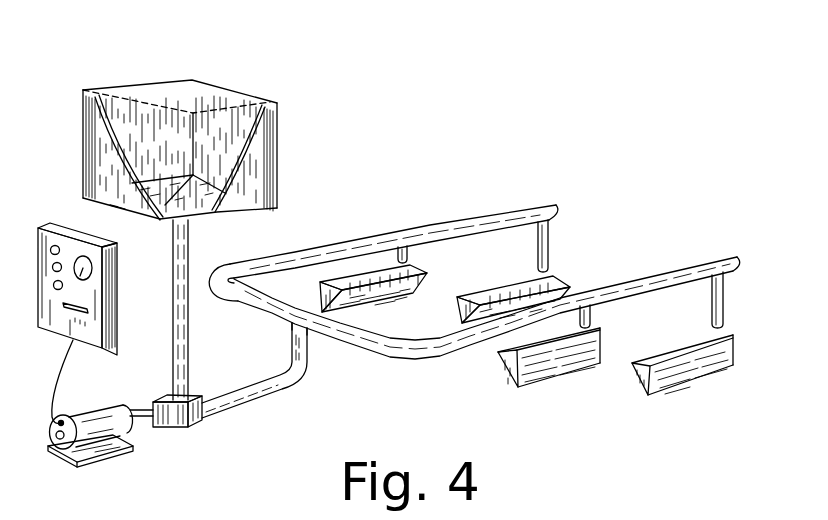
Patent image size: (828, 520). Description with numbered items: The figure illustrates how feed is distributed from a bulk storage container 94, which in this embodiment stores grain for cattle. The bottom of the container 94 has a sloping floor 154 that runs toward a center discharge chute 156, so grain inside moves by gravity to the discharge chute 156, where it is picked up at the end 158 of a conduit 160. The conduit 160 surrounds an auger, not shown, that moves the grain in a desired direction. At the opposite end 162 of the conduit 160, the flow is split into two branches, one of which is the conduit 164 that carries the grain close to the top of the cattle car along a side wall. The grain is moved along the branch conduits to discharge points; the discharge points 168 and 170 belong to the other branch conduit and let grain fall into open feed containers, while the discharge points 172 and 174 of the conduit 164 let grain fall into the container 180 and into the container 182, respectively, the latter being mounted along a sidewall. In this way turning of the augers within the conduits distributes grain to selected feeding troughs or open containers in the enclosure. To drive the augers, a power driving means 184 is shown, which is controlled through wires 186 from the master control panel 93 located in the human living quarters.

The bulk storage container 94 is at (214, 99).
The master control panel 93 is at (55, 222).
The sloping floor 154 is at (116, 205).
The discharge chute 156 is at (190, 325).
The end of conduit 158 is at (187, 428).
The conduit 160 is at (236, 406).
The end of conduit 162 is at (313, 336).
The conduit 164 is at (310, 253).
The discharge point 168 is at (592, 318).
The discharge point 170 is at (711, 285).
The discharge point 172 is at (410, 255).
The discharge point 174 is at (549, 222).
The container 180 is at (512, 349).
The container 182 is at (556, 280).
The power driving means 184 is at (84, 440).
The wires 186 is at (68, 383).